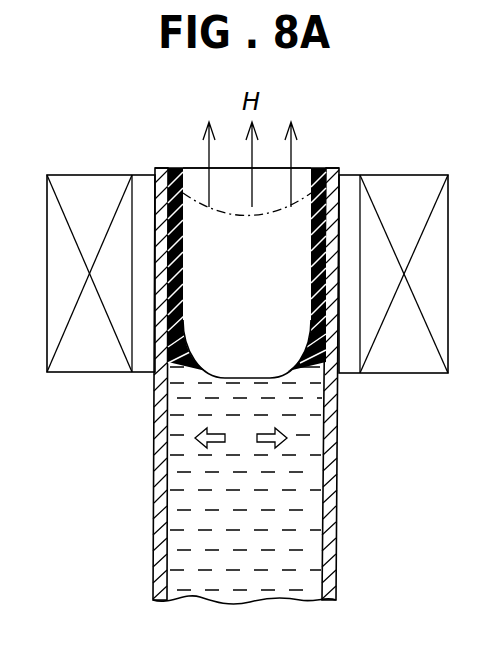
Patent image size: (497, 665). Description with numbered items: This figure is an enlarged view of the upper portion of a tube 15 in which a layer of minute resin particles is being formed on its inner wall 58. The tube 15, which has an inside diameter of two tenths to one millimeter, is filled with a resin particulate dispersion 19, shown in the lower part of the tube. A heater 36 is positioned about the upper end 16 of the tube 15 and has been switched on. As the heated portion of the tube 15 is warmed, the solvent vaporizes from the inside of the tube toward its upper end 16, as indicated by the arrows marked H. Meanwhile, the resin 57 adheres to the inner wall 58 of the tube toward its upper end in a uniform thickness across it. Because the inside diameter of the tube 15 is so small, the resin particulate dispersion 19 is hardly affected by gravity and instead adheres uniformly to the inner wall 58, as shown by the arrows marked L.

The tube 15 is at (338, 450).
The upper end 16 is at (342, 168).
The resin particulate dispersion 19 is at (290, 537).
The heater 36 is at (72, 372).
The resin 57 is at (173, 207).
The inner wall 58 is at (172, 255).